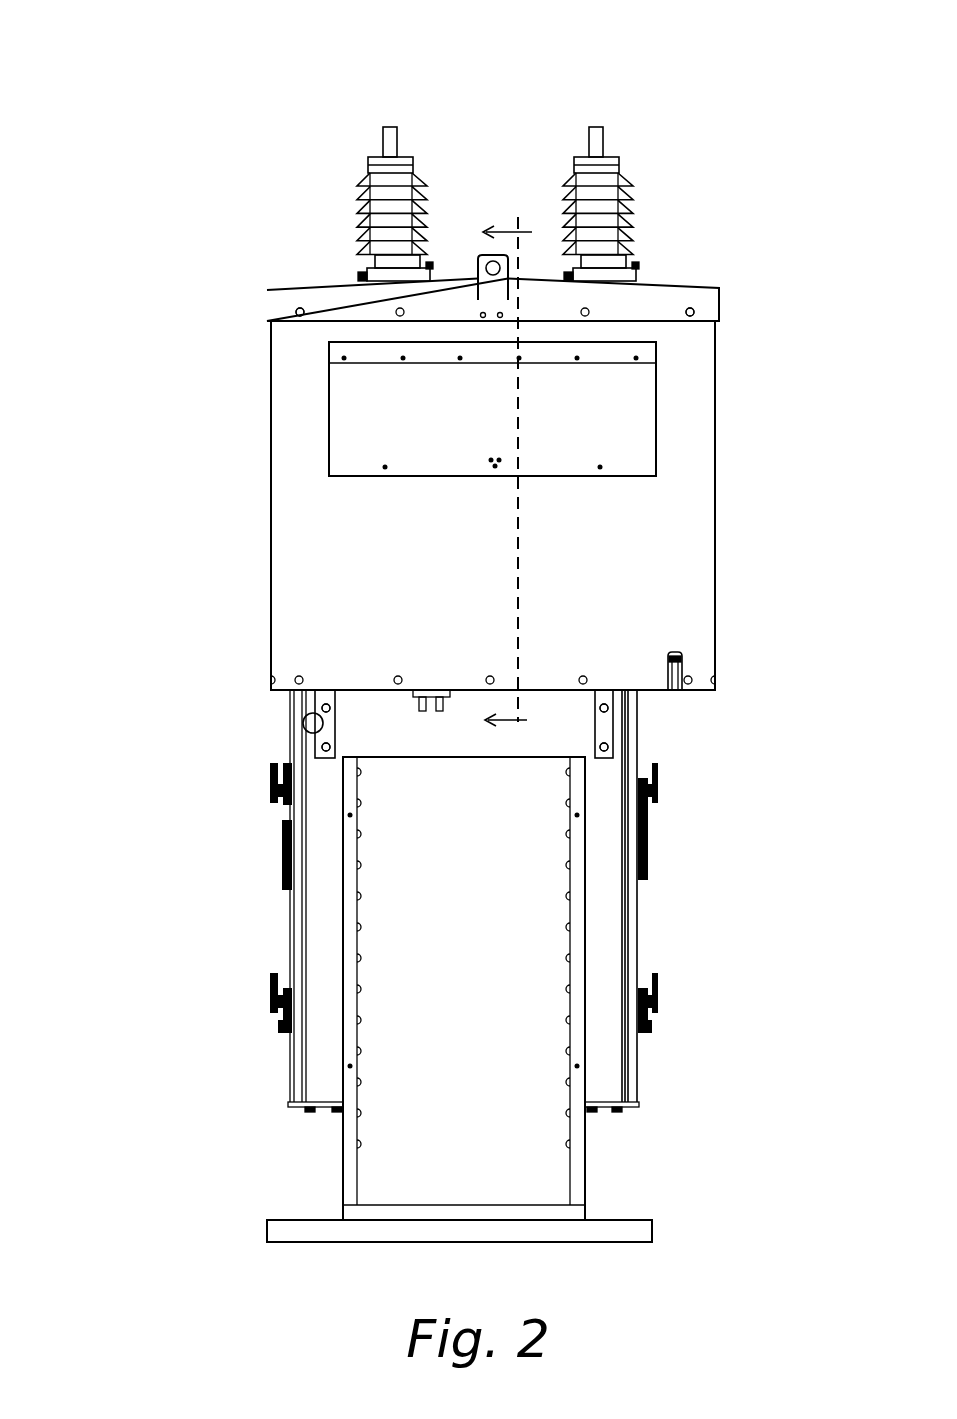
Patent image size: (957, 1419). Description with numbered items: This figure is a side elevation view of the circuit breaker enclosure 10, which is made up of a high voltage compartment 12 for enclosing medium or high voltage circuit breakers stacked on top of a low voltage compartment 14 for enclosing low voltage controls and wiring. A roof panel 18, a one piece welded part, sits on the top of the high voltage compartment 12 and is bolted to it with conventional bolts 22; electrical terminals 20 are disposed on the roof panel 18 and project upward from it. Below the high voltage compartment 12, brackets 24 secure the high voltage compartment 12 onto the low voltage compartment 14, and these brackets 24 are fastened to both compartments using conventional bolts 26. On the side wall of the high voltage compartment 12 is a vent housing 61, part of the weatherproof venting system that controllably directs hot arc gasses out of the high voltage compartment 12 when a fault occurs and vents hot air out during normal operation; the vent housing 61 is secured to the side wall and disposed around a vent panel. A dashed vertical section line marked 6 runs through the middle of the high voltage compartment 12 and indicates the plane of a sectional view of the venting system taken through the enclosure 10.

The enclosure 10 is at (455, 1289).
The high voltage compartment 12 is at (716, 527).
The low voltage compartment 14 is at (638, 882).
The roof panel 18 is at (687, 287).
The electrical terminals 20 is at (596, 127).
The bolts 22 is at (267, 305).
The brackets 24 is at (335, 750).
The bolts 26 is at (337, 748).
The section line 6- 6 is at (507, 471).
The vent housing 61 is at (656, 400).